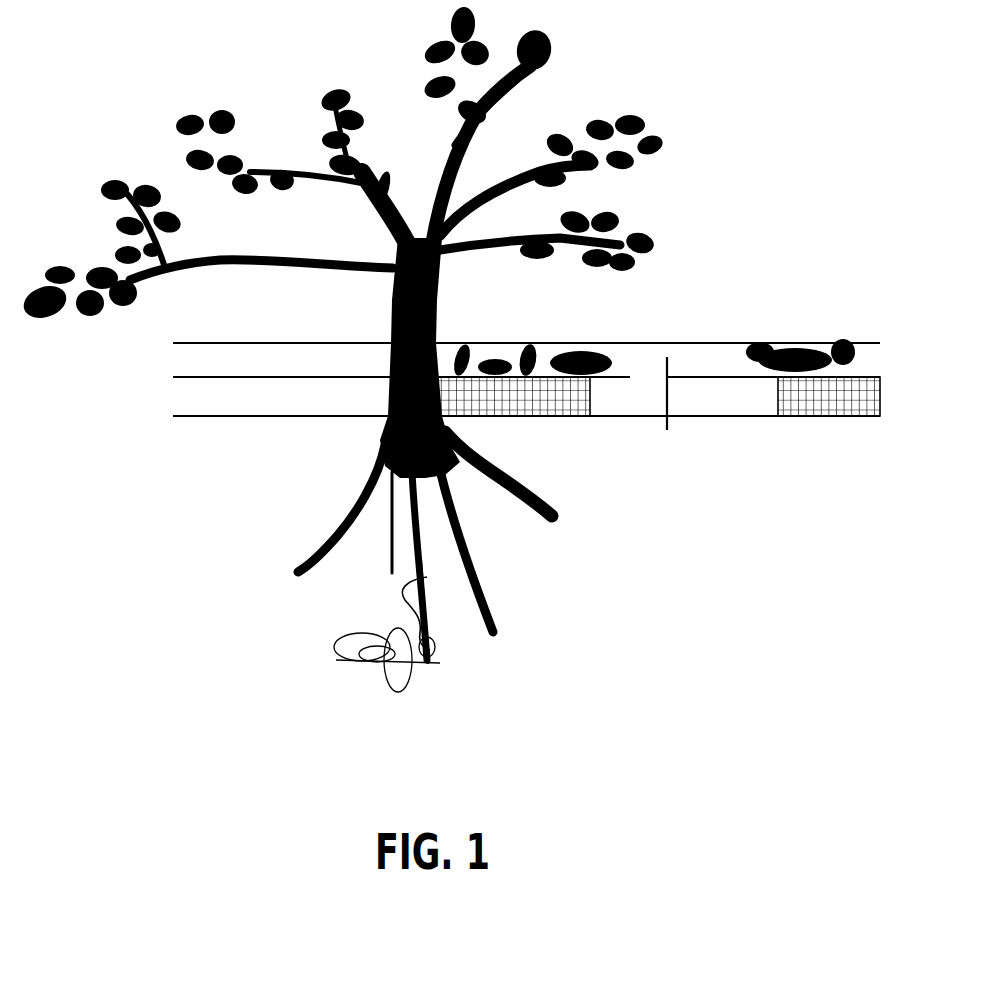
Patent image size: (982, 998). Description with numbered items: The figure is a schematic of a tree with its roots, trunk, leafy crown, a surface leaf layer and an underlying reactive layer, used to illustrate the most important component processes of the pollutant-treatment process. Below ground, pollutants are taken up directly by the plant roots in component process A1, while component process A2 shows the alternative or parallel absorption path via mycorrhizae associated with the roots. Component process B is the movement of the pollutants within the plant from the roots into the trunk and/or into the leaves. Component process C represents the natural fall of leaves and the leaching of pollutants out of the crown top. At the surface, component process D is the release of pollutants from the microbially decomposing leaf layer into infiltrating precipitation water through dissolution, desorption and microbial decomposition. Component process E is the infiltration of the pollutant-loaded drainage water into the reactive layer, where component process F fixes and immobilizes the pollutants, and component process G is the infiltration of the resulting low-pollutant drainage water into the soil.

The component process of direct absorption of pollutants by plant roots A1 is at (308, 551).
The component process of absorption of pollutants via mycorrhizae A2 is at (324, 646).
The component process of pollutant movement within the plant B is at (362, 460).
The component process of natural leaf fall C is at (666, 152).
The component process of pollutant release from the decomposing leaf layer D is at (658, 328).
The component process of infiltration into the reactive layer E is at (730, 363).
The component process of fixing pollutants in the binding layer F is at (690, 408).
The component process of infiltration of low-pollutant drainage water into the soil G is at (667, 430).